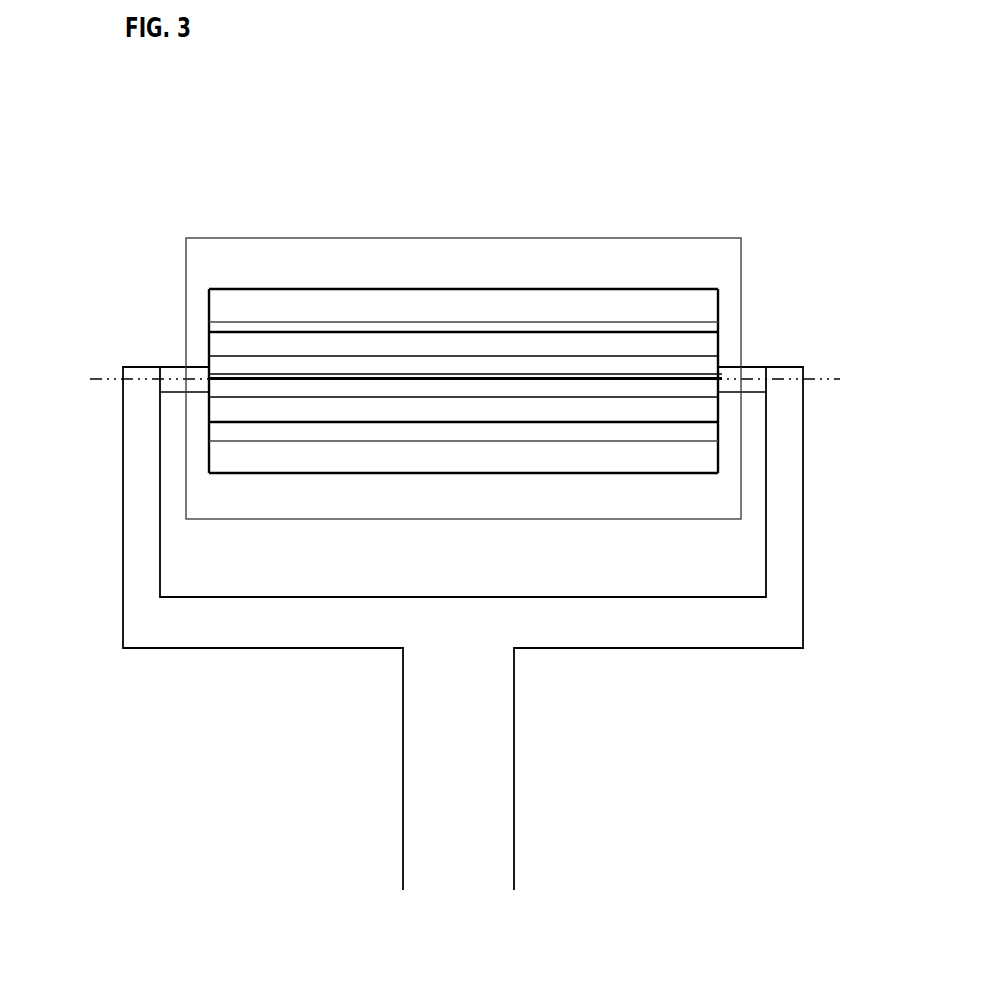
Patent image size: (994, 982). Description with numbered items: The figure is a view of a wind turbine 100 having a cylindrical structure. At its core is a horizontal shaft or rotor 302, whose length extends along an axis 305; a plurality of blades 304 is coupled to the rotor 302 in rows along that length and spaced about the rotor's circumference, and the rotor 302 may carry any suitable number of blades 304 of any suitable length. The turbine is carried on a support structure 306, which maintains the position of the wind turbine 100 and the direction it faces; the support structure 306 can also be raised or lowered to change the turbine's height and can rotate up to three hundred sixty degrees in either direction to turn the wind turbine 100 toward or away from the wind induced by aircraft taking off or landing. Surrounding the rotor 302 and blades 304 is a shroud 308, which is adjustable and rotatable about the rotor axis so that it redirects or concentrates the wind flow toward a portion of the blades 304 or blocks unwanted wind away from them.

The wind turbine 100 is at (738, 165).
The rotor 302 is at (708, 365).
The blades 304 is at (224, 379).
The axis 305 is at (99, 379).
The support structure 306 is at (515, 742).
The shroud 308 is at (243, 237).